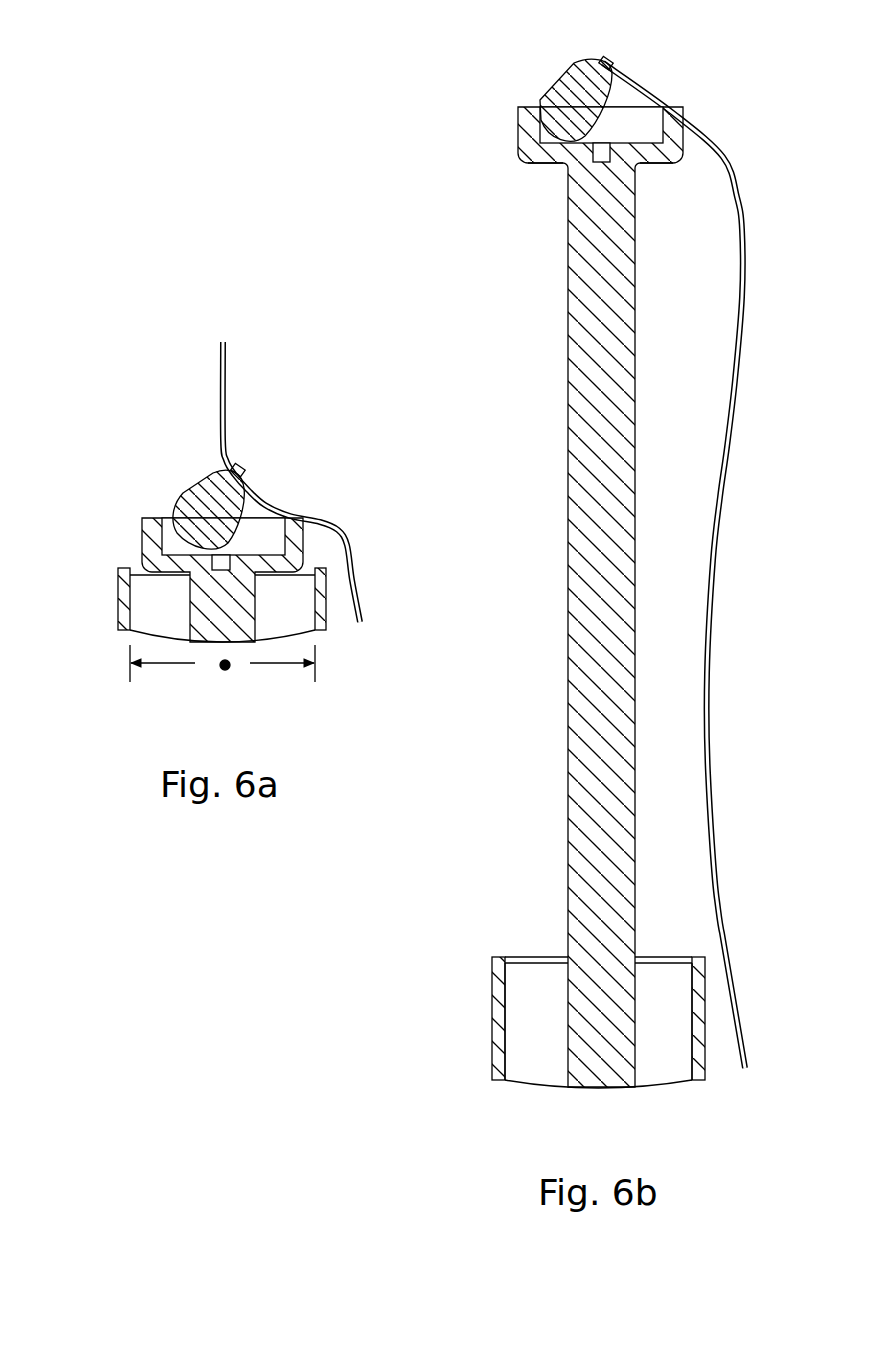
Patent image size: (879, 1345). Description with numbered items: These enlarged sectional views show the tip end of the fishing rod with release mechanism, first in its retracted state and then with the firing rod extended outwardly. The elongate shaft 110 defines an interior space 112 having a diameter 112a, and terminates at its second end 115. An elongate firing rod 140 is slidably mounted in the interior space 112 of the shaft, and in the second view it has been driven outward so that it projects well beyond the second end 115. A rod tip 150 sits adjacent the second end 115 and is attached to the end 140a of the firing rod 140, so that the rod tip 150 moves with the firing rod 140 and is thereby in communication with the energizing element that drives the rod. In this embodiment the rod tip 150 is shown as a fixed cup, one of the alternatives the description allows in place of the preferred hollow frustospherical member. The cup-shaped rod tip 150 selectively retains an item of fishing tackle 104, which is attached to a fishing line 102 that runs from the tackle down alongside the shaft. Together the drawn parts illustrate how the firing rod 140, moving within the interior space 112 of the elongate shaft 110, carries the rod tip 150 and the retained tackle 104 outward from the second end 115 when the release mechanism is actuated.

In FIG. 6A, the fishing line 102 is at (227, 393).
In FIG. 6B, the fishing line 102 is at (725, 158).
In FIG. 6A, the item of fishing tackle 104 is at (198, 487).
In FIG. 6B, the item of fishing tackle 104 is at (562, 83).
In FIG. 6A, the elongate shaft 110 is at (108, 618).
In FIG. 6B, the elongate shaft 110 is at (468, 1000).
In FIG. 6A, the interior space 112 is at (297, 618).
In FIG. 6B, the interior space 112 is at (523, 1063).
In FIG. 6A, the diameter of the elongate shaft interior space 112a is at (222, 668).
In FIG. 6B, the second end 115 is at (495, 957).
In FIG. 6B, the firing rod 140 is at (568, 343).
In FIG. 6B, the end of the firing rod 140a is at (567, 163).
In FIG. 6A, the rod tip 150 is at (143, 505).
In FIG. 6B, the rod tip 150 is at (510, 132).